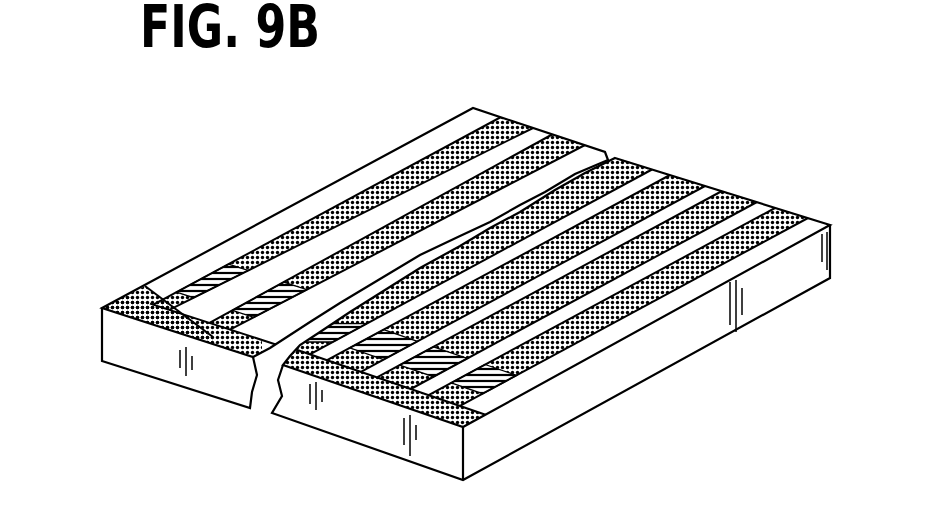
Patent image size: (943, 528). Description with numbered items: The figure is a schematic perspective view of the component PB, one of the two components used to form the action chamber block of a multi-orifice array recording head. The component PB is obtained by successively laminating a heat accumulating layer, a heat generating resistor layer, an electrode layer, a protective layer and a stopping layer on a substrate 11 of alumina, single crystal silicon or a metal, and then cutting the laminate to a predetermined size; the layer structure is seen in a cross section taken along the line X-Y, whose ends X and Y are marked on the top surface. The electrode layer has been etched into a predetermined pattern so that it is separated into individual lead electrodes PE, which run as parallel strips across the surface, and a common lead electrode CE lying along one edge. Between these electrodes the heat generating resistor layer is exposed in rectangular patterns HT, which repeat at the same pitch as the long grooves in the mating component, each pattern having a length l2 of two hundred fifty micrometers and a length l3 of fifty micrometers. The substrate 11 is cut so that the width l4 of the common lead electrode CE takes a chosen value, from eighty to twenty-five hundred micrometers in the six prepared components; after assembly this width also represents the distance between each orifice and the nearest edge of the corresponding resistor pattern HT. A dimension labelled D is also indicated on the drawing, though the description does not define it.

The component PB is at (307, 190).
The individual lead electrodes PE is at (383, 190).
The common lead electrode CE is at (136, 292).
The heat generating resistor pattern HT is at (230, 266).
The substrate 11 is at (672, 336).
The line X-Y X is at (375, 398).
The line X- Y is at (746, 200).
The depth direction D is at (168, 351).
The length l2 is at (230, 265).
The length l3 is at (113, 382).
The width l4 is at (145, 286).